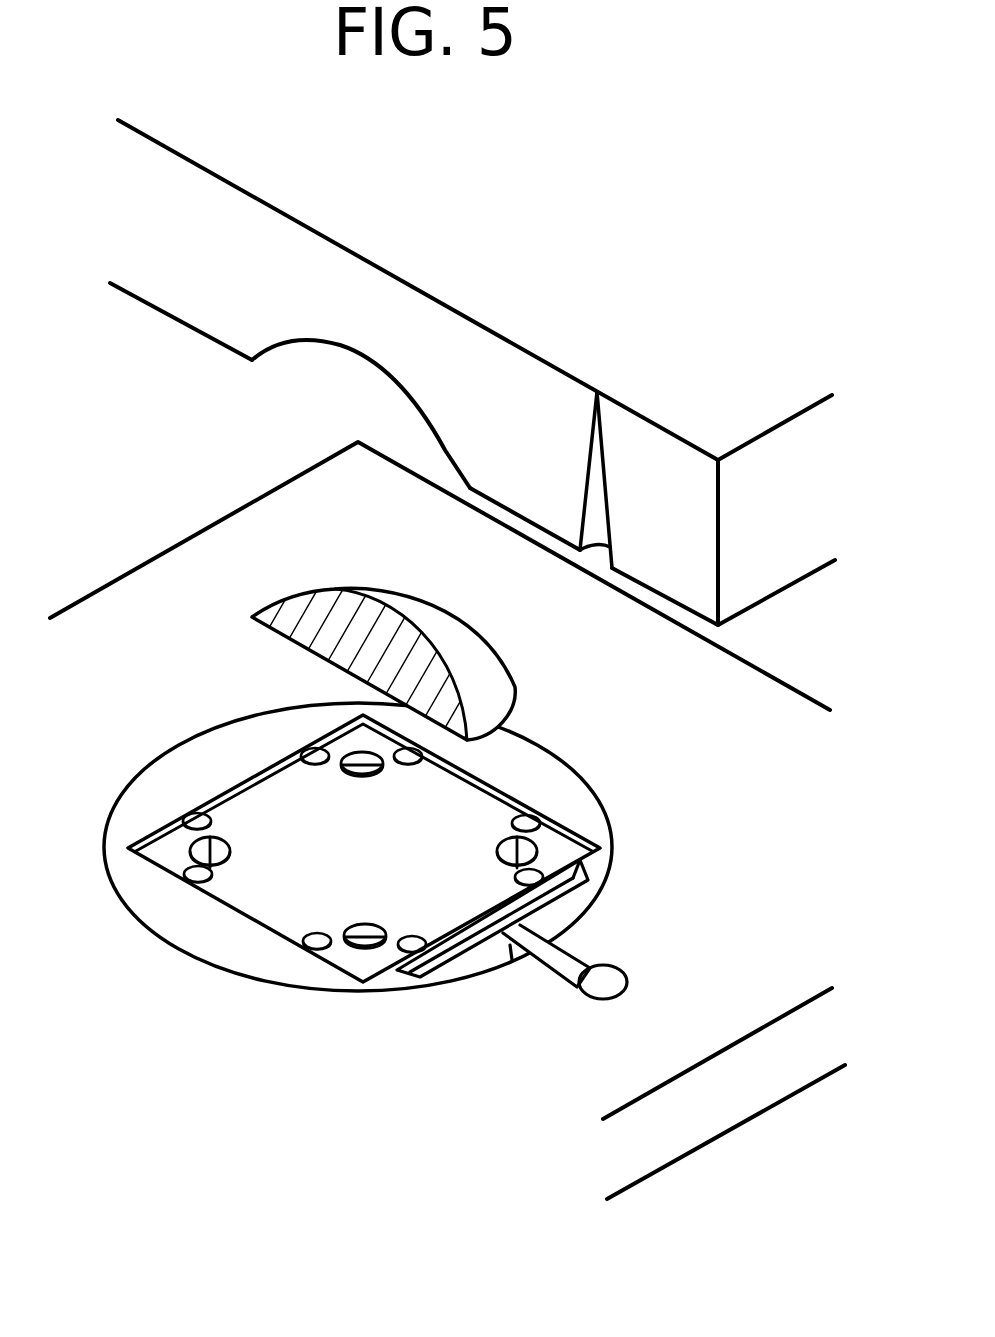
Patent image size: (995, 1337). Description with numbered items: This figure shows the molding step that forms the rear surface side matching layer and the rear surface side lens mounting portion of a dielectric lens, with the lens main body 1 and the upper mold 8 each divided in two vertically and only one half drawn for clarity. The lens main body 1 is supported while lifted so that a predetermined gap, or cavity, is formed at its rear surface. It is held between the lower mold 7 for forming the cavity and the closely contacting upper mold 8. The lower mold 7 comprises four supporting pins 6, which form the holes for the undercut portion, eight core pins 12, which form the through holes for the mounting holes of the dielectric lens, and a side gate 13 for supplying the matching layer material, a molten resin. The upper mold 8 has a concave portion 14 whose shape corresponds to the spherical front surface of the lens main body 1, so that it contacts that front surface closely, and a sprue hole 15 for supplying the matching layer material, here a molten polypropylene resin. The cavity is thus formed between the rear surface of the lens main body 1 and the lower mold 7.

The lens main body 1 is at (495, 670).
The supporting pins 6 is at (354, 752).
The lower mold for forming the cavity 7 is at (676, 1130).
The upper mold 8 is at (250, 292).
The pins (core pins) 12 is at (311, 749).
The gate (side gate) 13 is at (538, 910).
The concave portion 14 is at (353, 378).
The sprue hole 15 is at (593, 485).